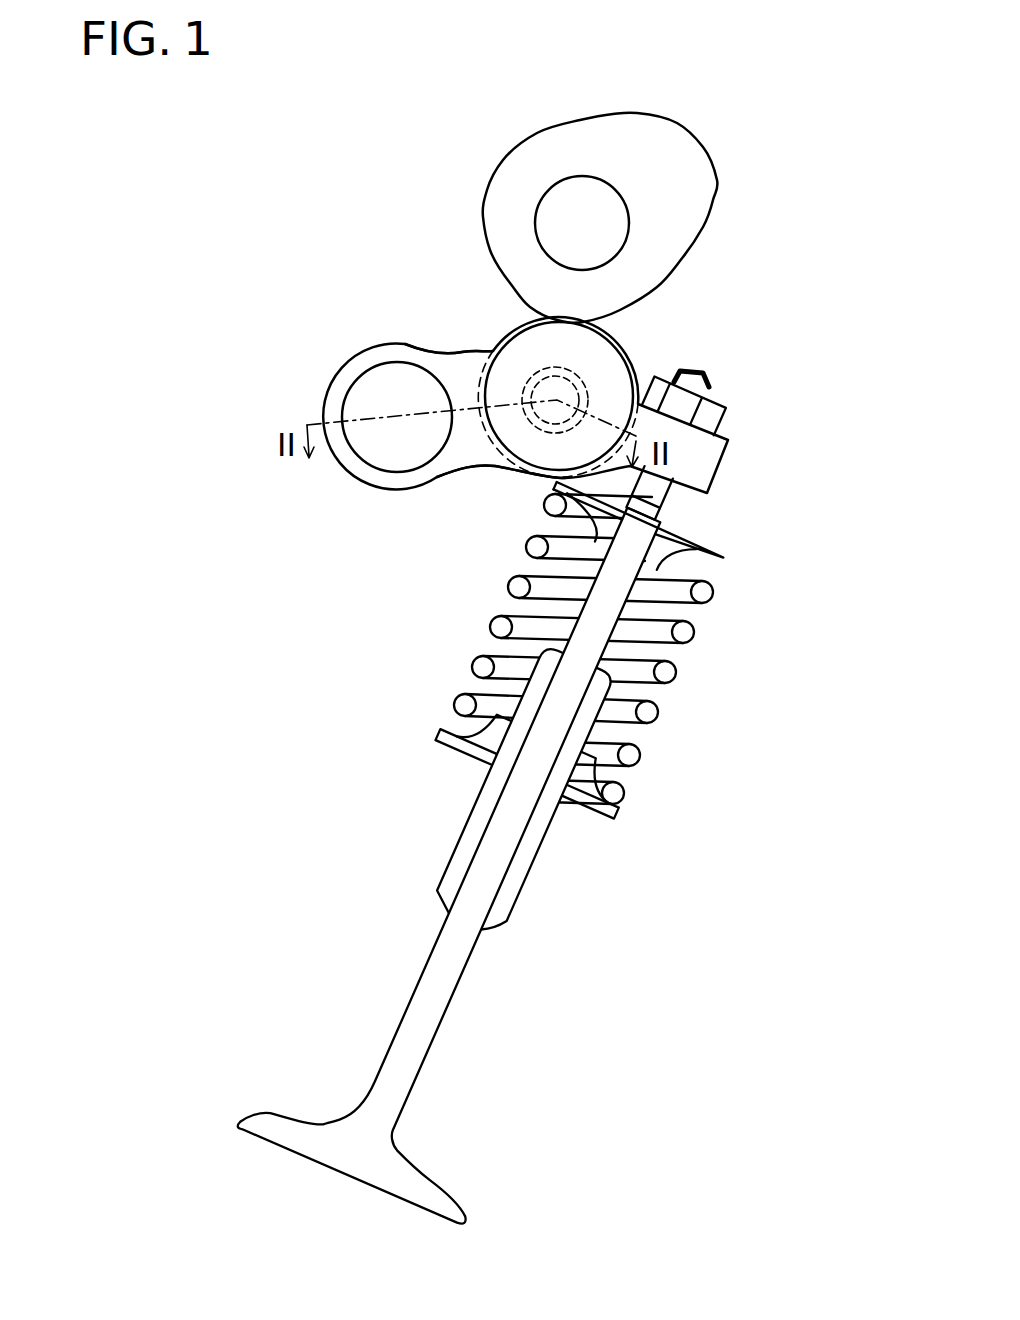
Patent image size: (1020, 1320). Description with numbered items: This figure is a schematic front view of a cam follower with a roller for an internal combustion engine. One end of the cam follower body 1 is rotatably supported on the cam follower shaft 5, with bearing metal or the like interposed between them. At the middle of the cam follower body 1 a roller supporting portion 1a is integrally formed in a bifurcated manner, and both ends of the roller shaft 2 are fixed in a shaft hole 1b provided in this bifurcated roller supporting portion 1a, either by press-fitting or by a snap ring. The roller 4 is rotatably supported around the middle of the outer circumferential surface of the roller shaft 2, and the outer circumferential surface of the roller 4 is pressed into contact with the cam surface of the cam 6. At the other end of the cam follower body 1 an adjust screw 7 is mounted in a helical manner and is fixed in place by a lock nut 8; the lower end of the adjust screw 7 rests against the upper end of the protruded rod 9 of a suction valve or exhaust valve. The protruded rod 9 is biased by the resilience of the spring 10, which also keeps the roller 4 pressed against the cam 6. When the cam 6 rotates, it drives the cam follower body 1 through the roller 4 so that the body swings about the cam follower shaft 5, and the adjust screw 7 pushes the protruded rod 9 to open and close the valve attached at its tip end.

The cam follower body 1 is at (514, 383).
The roller supporting portion 1a is at (460, 352).
The shaft hole 1b is at (577, 372).
The roller shaft 2 is at (587, 385).
The roller 4 is at (700, 376).
The cam follower shaft 5 is at (367, 387).
The cam 6 is at (690, 173).
The adjust screw 7 is at (667, 508).
The lock nut 8 is at (712, 407).
The protruded rod 9 is at (497, 848).
The spring 10 is at (688, 633).